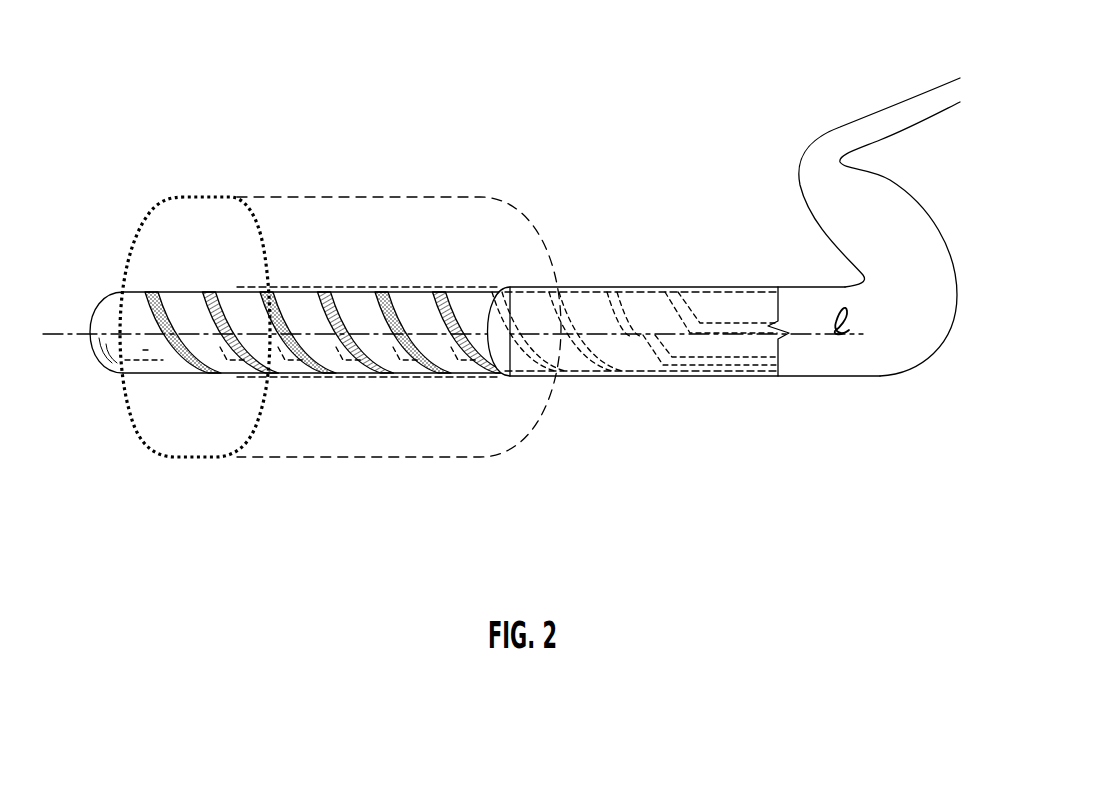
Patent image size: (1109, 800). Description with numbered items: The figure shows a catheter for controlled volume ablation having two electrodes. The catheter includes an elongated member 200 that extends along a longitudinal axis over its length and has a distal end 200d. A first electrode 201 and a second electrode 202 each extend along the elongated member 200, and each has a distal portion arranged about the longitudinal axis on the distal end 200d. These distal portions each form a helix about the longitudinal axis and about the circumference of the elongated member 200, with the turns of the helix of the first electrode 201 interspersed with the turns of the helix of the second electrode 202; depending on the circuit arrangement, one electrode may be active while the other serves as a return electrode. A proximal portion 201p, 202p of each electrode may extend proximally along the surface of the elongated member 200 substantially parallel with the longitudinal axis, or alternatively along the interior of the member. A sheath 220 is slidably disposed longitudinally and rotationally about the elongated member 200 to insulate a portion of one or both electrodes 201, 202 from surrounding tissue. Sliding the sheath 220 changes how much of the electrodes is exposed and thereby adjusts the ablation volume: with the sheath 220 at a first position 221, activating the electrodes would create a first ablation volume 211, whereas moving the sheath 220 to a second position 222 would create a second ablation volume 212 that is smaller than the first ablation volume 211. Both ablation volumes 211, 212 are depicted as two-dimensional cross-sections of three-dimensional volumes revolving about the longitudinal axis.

The elongated member 200 is at (279, 249).
The distal end 200d is at (100, 323).
The first electrode 201 is at (163, 291).
The second electrode 202 is at (207, 297).
The proximal portion of the first electrode 201p is at (757, 333).
The proximal portion of the second electrode 202p is at (733, 357).
The sheath 220 is at (724, 292).
The first position 221 is at (503, 375).
The second position 222 is at (233, 378).
The first ablation volume 211 is at (322, 457).
The second ablation volume 212 is at (165, 455).